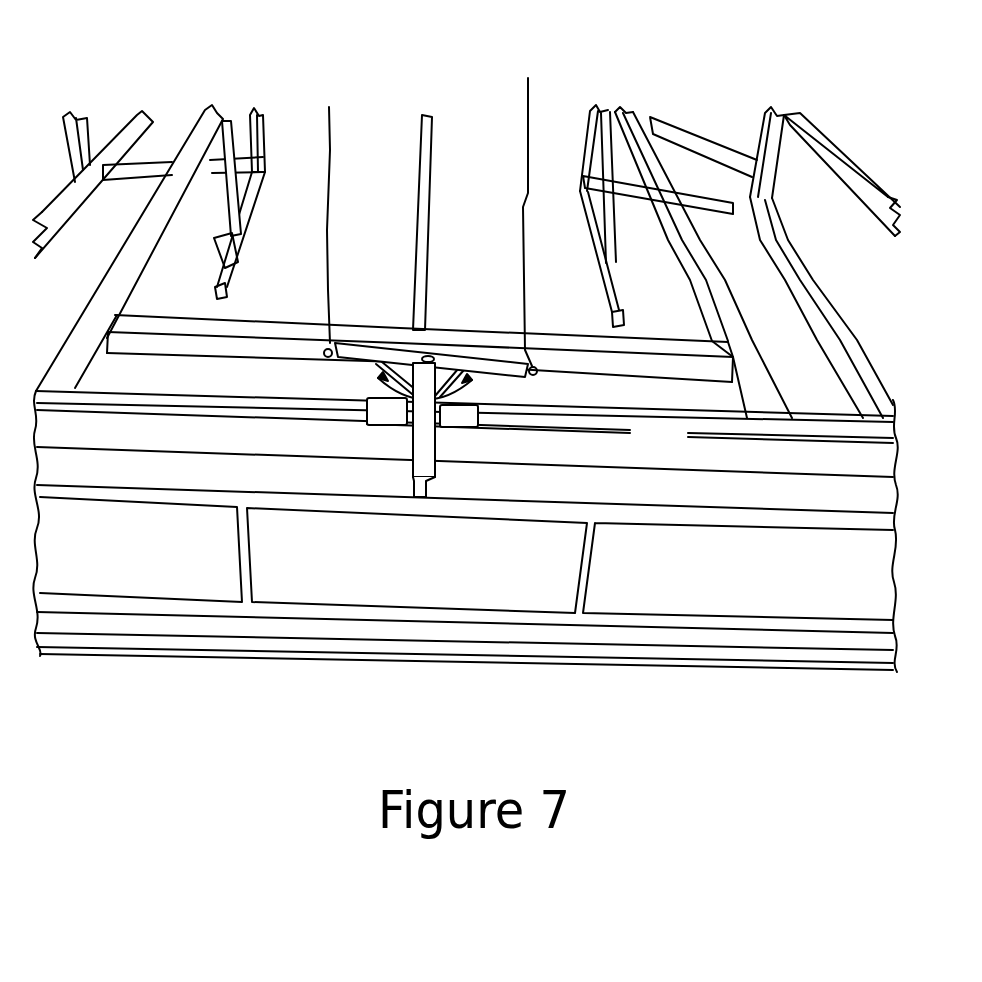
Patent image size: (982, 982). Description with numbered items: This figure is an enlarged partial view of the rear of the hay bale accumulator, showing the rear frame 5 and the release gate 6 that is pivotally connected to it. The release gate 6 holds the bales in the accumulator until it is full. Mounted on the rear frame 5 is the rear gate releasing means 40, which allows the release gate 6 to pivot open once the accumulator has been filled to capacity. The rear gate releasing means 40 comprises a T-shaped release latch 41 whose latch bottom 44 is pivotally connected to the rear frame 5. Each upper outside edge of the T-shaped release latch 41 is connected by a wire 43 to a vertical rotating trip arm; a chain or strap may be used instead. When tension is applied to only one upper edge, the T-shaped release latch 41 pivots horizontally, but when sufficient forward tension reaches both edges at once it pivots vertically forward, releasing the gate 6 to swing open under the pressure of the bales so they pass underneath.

The rear frame 5 is at (668, 450).
The release gate 6 is at (668, 582).
The rear gate releasing means 40 is at (404, 428).
The T-shaped release latch 41 is at (352, 357).
The wire 43 is at (330, 270).
The latch bottom 44 is at (425, 435).